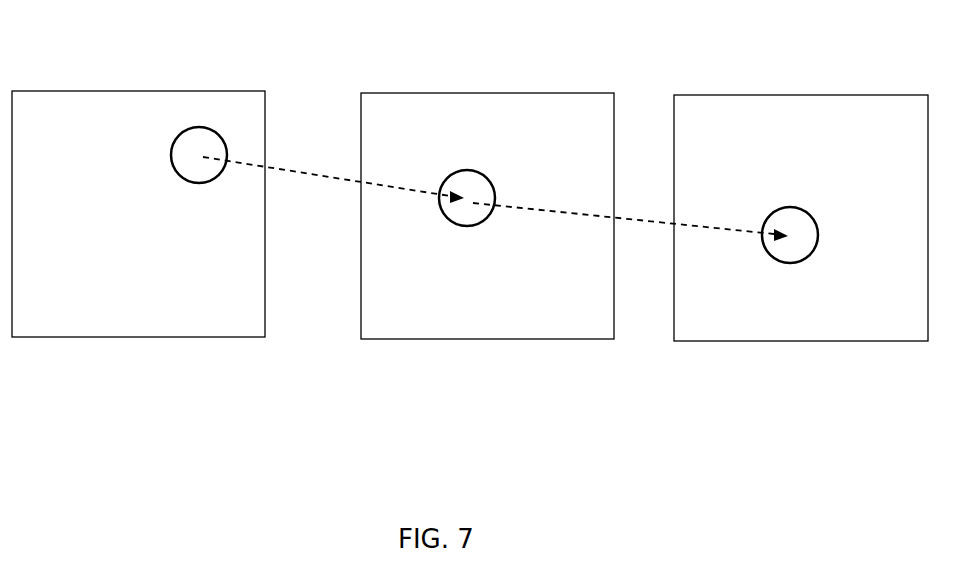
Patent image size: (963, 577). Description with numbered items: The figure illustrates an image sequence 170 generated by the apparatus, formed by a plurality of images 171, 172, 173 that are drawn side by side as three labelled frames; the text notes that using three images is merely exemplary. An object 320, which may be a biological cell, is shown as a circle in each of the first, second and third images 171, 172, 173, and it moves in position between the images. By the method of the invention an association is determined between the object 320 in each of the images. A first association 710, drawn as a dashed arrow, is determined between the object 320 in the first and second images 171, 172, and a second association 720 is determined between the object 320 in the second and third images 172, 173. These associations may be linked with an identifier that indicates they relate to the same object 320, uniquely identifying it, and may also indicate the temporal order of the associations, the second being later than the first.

The image sequence 170 is at (820, 414).
The first image 171 is at (26, 346).
The second image 172 is at (380, 350).
The third image 173 is at (692, 348).
The object 320 is at (215, 136).
The first association 710 is at (333, 175).
The second association 720 is at (630, 215).